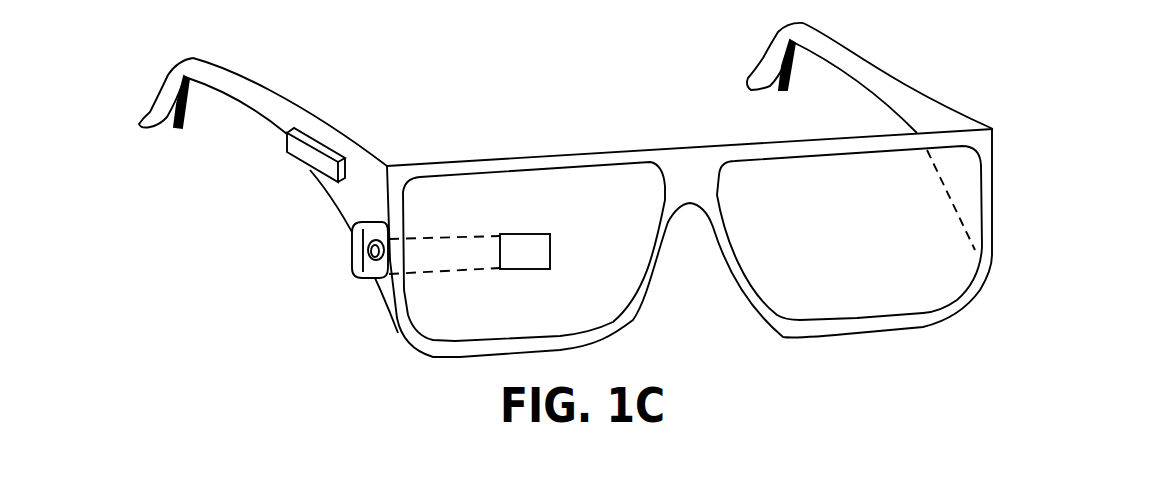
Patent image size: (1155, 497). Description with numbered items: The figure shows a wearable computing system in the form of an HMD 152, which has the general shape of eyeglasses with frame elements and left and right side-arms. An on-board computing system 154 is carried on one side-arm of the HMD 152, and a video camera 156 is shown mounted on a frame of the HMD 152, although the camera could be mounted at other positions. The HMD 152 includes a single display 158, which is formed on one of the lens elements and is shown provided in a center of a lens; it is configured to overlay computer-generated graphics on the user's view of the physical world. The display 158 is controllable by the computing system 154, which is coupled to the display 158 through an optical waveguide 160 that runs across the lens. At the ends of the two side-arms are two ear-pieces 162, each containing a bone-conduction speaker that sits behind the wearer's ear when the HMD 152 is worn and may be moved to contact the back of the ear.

The HMD 152 is at (1047, 197).
The on-board computing system 154 is at (304, 153).
The video camera 156 is at (354, 254).
The display 158 is at (520, 270).
The optical waveguide 160 is at (433, 271).
The ear-pieces 162 is at (189, 109).